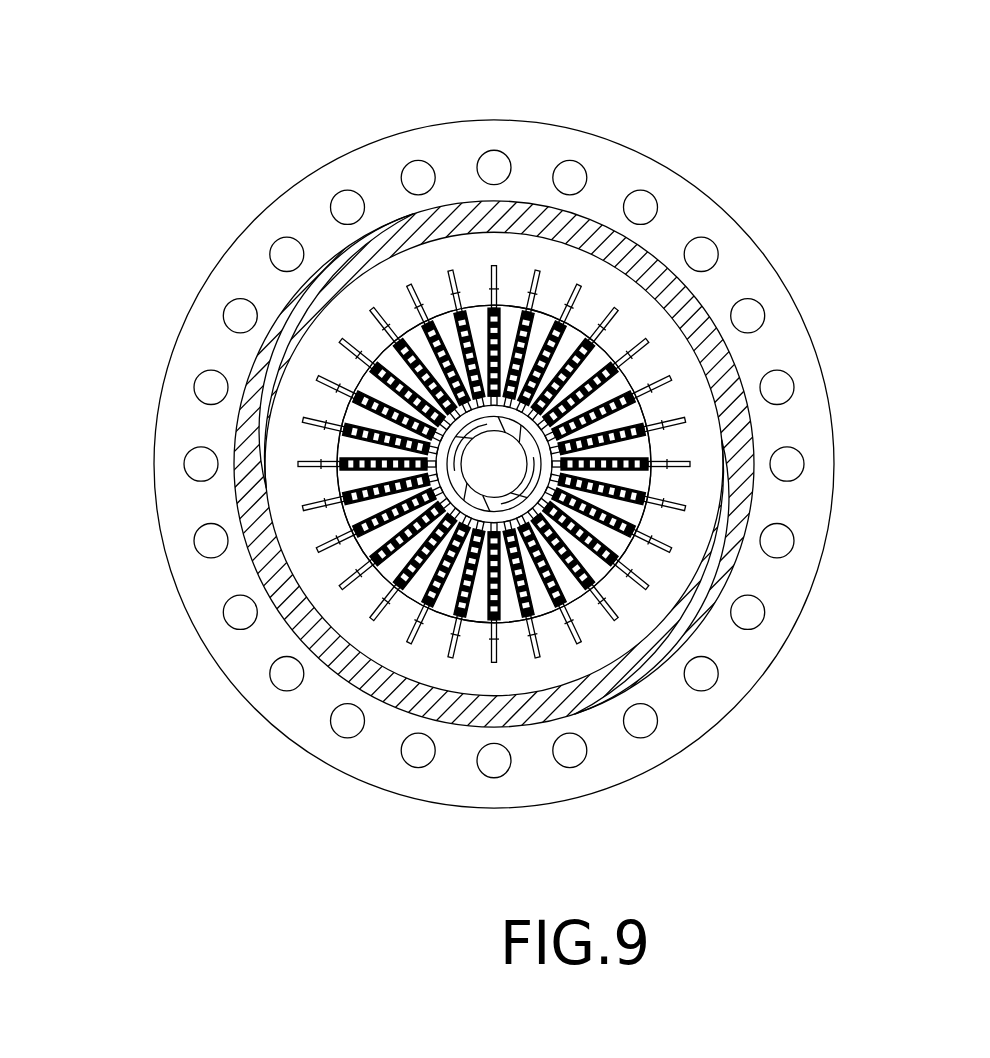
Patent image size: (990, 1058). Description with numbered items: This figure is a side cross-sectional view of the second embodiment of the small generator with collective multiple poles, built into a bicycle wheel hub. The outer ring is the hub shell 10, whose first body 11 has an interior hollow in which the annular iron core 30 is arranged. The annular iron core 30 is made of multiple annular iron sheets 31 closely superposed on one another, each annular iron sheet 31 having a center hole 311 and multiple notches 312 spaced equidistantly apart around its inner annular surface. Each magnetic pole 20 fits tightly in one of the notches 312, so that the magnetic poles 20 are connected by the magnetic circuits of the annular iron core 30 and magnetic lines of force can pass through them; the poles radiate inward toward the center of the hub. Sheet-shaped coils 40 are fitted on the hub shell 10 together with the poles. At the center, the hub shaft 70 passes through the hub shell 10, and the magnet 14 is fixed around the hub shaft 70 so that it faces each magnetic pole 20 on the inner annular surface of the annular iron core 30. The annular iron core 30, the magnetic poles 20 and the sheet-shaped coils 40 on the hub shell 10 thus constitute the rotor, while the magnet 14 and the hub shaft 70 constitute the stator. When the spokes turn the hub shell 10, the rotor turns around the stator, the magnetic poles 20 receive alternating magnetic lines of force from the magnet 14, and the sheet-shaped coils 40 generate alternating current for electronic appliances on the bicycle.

The hub shell 10 is at (669, 149).
The first body 11 is at (688, 223).
The annular iron core 30 is at (721, 380).
The annular iron sheet 31 is at (652, 317).
The center hole 311 is at (630, 477).
The notch 312 is at (680, 421).
The sheet-shaped coil 40 is at (447, 610).
The magnetic pole 20 is at (463, 653).
The magnet 14 is at (538, 473).
The hub shaft 70 is at (490, 503).